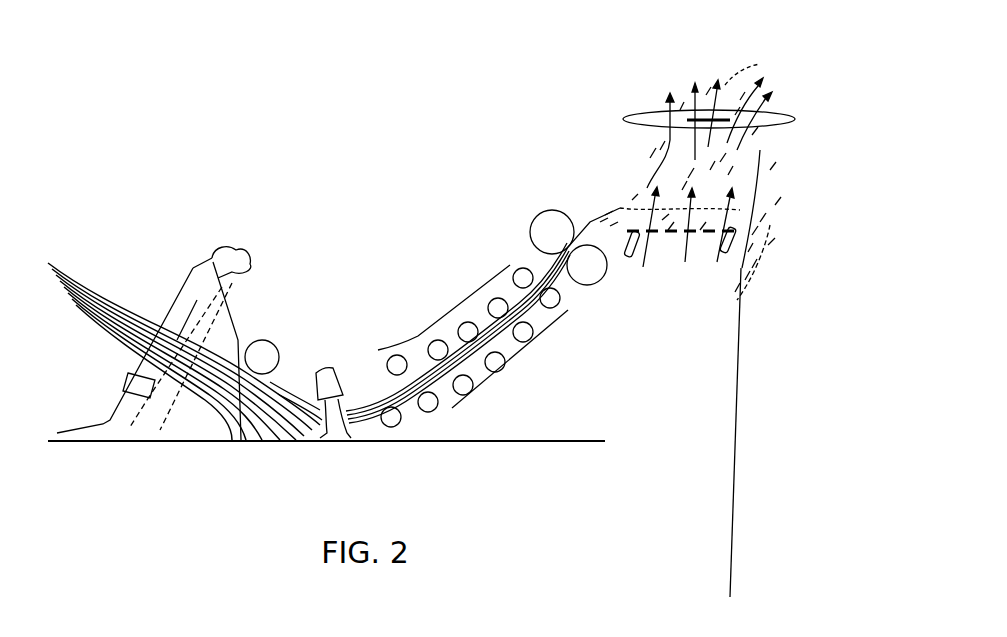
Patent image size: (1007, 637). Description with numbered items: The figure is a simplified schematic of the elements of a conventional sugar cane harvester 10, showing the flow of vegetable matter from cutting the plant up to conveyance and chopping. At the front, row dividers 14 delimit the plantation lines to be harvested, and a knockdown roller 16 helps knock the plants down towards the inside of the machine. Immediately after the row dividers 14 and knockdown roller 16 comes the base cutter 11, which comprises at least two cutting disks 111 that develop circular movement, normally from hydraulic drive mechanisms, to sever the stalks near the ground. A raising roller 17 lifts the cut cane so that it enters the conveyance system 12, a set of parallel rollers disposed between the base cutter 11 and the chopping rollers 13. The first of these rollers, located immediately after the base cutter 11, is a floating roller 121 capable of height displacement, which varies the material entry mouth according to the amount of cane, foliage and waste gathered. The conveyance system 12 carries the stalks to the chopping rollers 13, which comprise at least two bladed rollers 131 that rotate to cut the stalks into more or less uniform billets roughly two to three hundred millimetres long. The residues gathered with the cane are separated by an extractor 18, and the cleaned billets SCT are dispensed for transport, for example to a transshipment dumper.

The spinning apparatus 10 is at (495, 160).
The base cutter 11 is at (376, 370).
The cutting disks 111 is at (342, 443).
The conveyance system 12 is at (446, 344).
The floating roller 121 is at (397, 356).
The chopping rollers 13 is at (622, 314).
The bladed rollers 131 is at (583, 270).
The row dividers 14 is at (188, 290).
The knockdown roller 16 is at (263, 340).
The raising roller 17 is at (396, 422).
The extractor 18 is at (640, 227).
The billets SCT is at (733, 449).